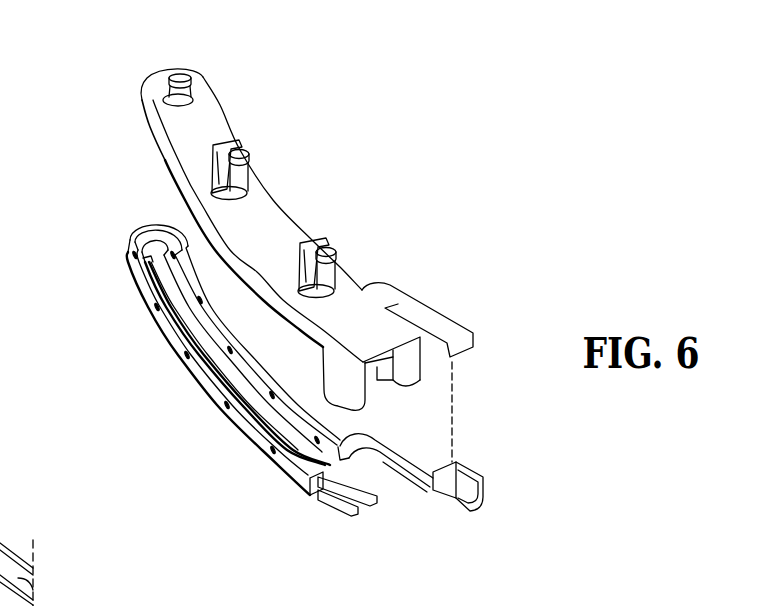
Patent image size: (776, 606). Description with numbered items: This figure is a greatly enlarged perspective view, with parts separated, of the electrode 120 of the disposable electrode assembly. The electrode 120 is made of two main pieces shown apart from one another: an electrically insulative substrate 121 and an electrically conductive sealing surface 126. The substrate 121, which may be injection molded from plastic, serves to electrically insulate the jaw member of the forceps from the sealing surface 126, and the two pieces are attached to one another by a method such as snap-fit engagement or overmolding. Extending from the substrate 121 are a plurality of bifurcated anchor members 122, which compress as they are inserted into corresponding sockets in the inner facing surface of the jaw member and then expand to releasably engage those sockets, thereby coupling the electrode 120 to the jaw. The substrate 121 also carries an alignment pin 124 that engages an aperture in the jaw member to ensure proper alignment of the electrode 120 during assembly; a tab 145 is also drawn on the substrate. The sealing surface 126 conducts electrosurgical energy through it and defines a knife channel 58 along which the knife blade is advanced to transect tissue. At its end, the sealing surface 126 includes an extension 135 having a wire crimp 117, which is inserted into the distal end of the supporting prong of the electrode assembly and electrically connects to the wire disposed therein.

The electrode 120 is at (104, 206).
The electrically insulative substrate 121 is at (273, 220).
The bifurcated anchor members 122 is at (242, 147).
The alignment pin 124 is at (183, 77).
The tab 145 is at (443, 323).
The electrically conductive sealing surface 126 is at (178, 347).
The knife channel 58 is at (140, 276).
The extension 135 is at (410, 465).
The wire crimp 117 is at (448, 492).